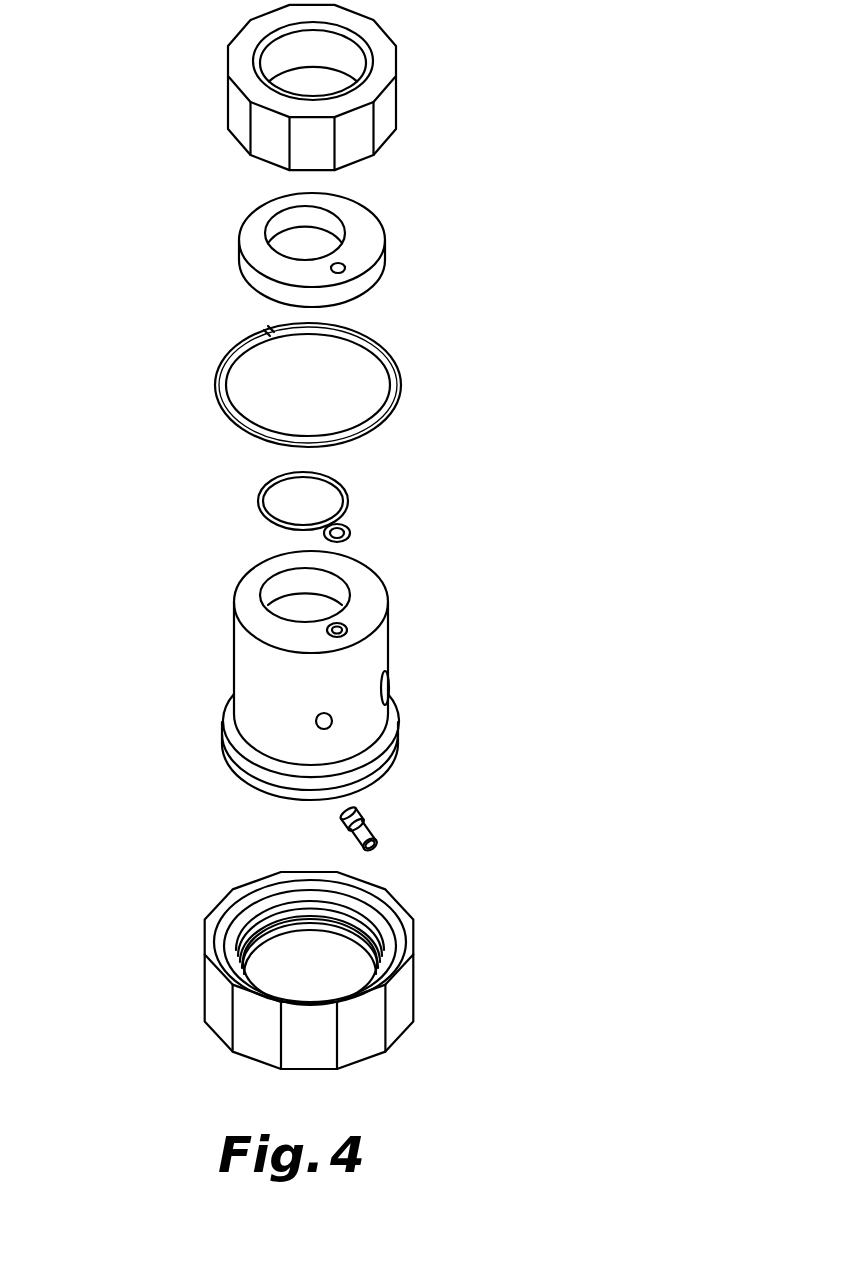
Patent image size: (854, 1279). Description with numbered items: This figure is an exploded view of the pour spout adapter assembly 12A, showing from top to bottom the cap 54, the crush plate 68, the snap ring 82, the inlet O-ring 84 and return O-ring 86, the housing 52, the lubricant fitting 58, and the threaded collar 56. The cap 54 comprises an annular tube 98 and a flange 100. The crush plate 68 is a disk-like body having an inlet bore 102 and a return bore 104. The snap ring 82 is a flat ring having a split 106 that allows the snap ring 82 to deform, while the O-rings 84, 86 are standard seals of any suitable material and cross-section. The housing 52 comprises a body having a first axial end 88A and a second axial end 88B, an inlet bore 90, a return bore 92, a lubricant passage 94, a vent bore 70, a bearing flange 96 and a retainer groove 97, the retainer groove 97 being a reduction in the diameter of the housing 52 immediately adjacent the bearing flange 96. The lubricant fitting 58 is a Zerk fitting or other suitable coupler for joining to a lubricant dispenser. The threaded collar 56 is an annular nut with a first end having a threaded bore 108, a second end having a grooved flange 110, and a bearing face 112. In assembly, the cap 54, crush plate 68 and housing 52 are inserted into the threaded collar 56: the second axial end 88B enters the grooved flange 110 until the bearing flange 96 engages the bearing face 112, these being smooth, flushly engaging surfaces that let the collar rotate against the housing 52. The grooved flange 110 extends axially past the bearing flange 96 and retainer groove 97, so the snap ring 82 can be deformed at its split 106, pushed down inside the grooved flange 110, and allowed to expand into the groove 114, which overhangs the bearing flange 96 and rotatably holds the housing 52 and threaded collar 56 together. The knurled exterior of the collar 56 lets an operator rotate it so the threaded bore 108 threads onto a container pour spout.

The pour spout adapter assembly 12A is at (578, 345).
The cap 54 is at (208, 78).
The flange 100 is at (375, 37).
The annular tube 98 is at (355, 135).
The crush plate 68 is at (232, 241).
The inlet bore 102 is at (335, 228).
The return bore 104 is at (342, 270).
The snap ring 82 is at (208, 390).
The split 106 is at (266, 330).
The inlet O-ring 84 is at (262, 494).
The return O-ring 86 is at (352, 535).
The housing 52 is at (222, 668).
The first axial end 88A is at (367, 590).
The inlet bore 90 is at (283, 573).
The return bore 92 is at (345, 622).
The lubricant passage 94 is at (316, 720).
The vent bore 70 is at (390, 688).
The bearing flange 96 is at (390, 742).
The retainer groove 97 is at (265, 762).
The second axial end 88B is at (270, 792).
The lubricant fitting 58 is at (388, 832).
The threaded collar 56 is at (205, 997).
The groove 114 is at (253, 903).
The threaded bore 108 is at (350, 940).
The grooved flange 110 is at (416, 918).
The bearing face 112 is at (383, 965).